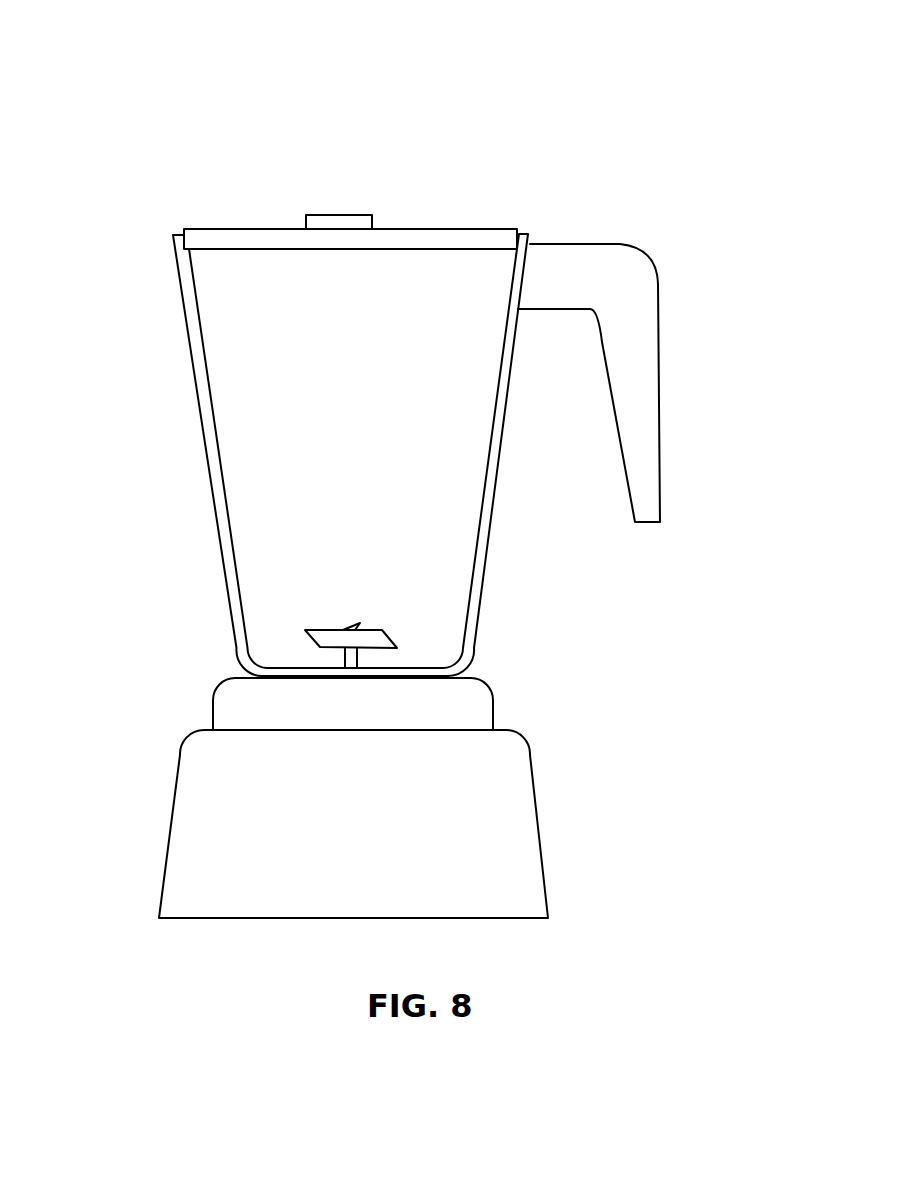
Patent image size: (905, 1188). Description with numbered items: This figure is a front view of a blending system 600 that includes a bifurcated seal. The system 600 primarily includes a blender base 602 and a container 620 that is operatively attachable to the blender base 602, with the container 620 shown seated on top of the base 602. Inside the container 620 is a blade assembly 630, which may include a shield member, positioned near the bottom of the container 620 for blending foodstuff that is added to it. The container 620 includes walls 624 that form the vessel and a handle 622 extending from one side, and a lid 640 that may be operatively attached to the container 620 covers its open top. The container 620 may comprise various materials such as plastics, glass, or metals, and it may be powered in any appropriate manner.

The system 600 is at (660, 55).
The blender base 602 is at (517, 778).
The container 620 is at (138, 464).
The handle 622 is at (645, 280).
The walls 624 is at (193, 323).
The blade assembly 630 is at (290, 614).
The lid 640 is at (208, 203).